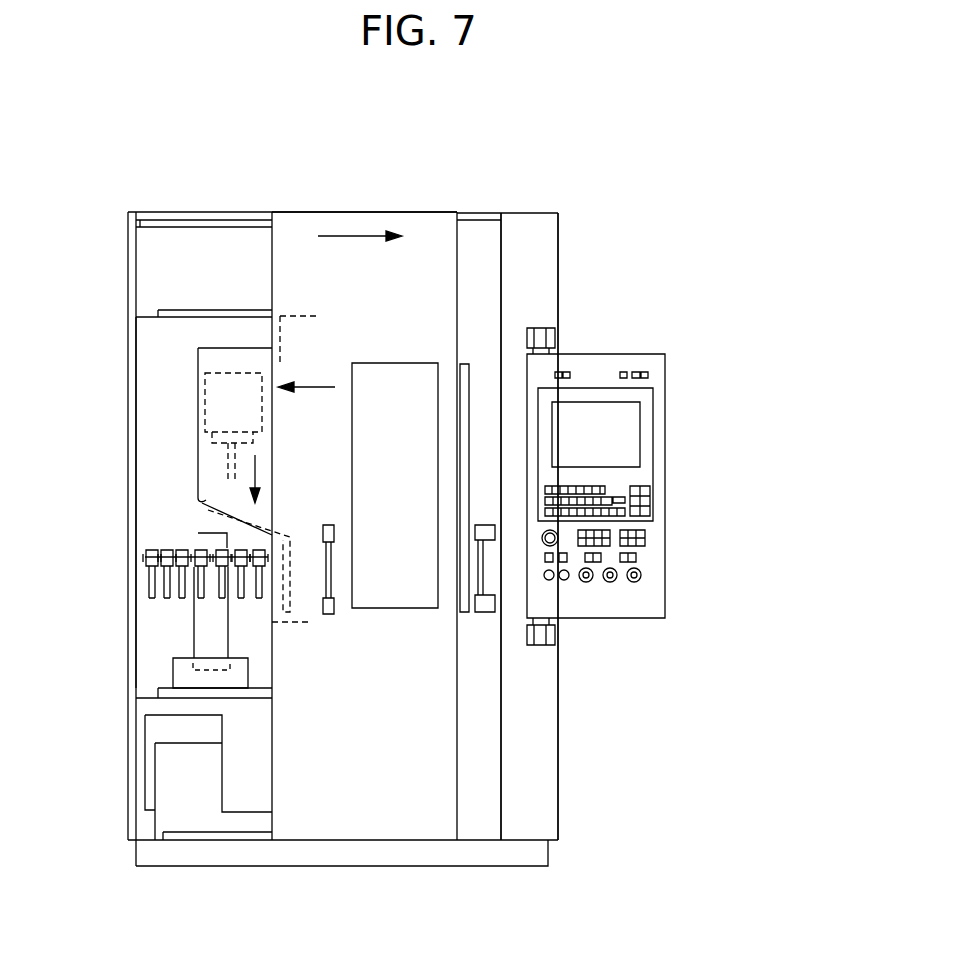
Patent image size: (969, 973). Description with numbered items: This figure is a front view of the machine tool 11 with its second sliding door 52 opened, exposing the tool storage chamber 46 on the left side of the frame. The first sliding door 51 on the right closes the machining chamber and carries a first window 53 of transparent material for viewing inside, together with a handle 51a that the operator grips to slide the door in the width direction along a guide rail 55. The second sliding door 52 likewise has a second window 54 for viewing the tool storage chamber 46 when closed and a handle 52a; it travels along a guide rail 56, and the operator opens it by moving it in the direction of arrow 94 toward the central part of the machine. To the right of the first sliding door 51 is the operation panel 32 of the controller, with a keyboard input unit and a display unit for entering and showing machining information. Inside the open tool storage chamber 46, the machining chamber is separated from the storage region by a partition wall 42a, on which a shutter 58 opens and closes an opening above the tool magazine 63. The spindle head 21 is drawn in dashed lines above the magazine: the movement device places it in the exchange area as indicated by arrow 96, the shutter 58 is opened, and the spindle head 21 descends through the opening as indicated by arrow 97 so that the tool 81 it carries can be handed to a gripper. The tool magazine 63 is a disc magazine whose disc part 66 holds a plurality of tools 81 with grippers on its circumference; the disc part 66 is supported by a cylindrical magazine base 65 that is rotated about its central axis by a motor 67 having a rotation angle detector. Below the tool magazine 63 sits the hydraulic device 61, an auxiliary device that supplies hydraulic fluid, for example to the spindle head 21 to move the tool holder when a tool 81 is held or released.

The machine tool 11 is at (493, 133).
The spindle head 21 is at (205, 395).
The operation panel 32 is at (645, 440).
The partition wall 42a is at (220, 363).
The tool storage chamber 46 is at (165, 425).
The first sliding door 51 is at (473, 805).
The handle 51a is at (485, 605).
The second sliding door 52 is at (303, 800).
The handle 52a is at (325, 616).
The first window 53 is at (463, 452).
The second window 54 is at (415, 590).
The guide rail 55 is at (156, 311).
The guide rail 56 is at (153, 222).
The shutter 58 is at (216, 500).
The hydraulic device 61 is at (168, 823).
The tool magazine 63 is at (75, 505).
The magazine base 65 is at (210, 612).
The disc part 66 is at (150, 552).
The motor 67 is at (208, 533).
The tool 81 is at (258, 600).
The arrow 94 is at (349, 236).
The arrow 96 is at (311, 385).
The arrow 97 is at (250, 465).